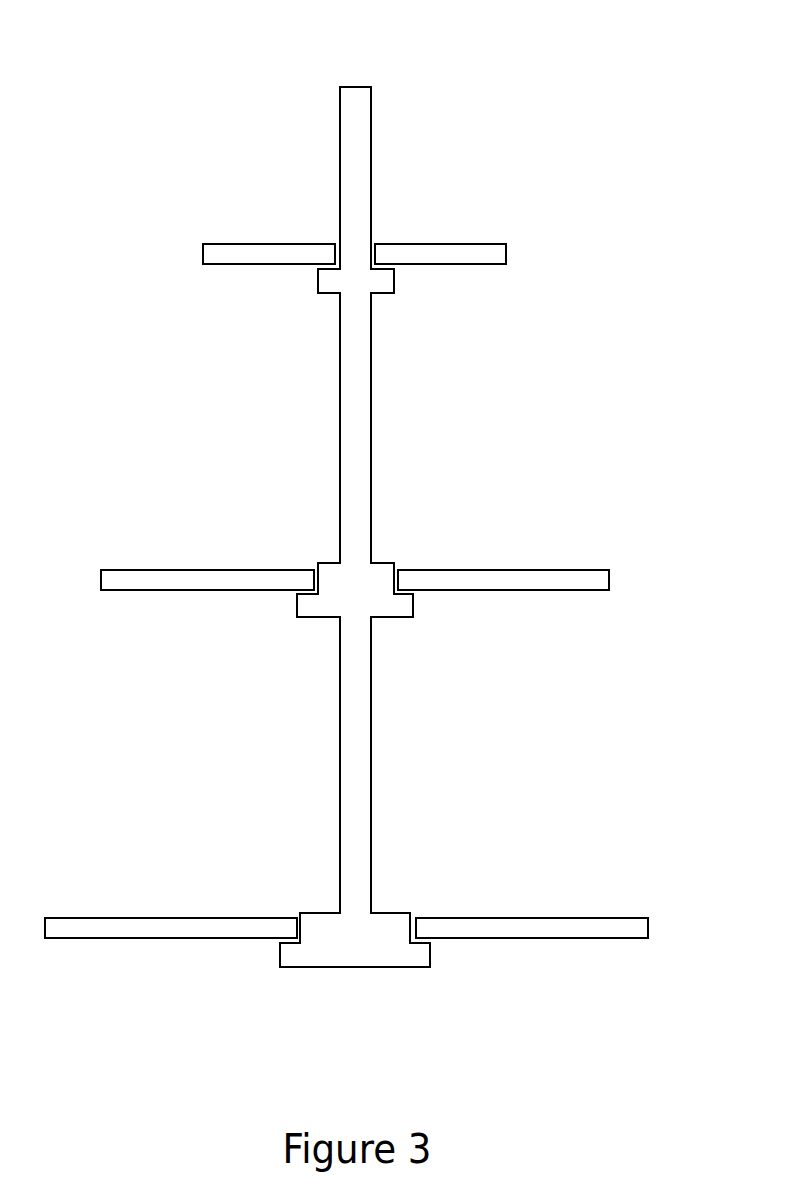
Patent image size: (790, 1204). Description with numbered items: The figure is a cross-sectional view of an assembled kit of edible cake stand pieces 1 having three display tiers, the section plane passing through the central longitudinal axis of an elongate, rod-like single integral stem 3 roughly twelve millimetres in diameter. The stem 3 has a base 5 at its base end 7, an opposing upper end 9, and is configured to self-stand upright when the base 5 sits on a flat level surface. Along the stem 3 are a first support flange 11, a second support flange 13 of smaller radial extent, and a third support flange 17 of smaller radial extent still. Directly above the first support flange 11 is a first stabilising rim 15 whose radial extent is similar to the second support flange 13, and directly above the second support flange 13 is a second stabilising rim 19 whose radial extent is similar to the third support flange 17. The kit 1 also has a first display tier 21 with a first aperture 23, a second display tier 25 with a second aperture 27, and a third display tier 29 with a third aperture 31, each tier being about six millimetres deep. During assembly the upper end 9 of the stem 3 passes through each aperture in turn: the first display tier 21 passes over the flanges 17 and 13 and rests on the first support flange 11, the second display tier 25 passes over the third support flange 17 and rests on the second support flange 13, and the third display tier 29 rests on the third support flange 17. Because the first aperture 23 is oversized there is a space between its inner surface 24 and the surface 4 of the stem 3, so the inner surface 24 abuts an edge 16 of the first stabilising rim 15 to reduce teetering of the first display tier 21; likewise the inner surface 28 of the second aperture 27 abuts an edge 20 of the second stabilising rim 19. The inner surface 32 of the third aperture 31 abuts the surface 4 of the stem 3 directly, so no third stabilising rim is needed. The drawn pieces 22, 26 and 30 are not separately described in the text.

The kit of edible cake stand pieces 1 is at (172, 153).
The stem 3 is at (371, 355).
The surface of the stem 4 is at (358, 413).
The base 5 is at (322, 968).
The base end 7 is at (353, 998).
The upper end 9 is at (362, 76).
The first support flange 11 is at (292, 958).
The second support flange 13 is at (313, 605).
The first stabilising rim 15 is at (390, 927).
The edge of the first stabilising rim 16 is at (300, 913).
The third support flange 17 is at (327, 280).
The second stabilising rim 19 is at (380, 575).
The edge of the second stabilising rim 20 is at (317, 562).
The first display tier 21 is at (643, 927).
The lower right flange 22 is at (612, 918).
The first aperture 23 is at (300, 920).
The inner surface of the first aperture 24 is at (415, 968).
The second display tier 25 is at (603, 577).
The middle right flange 26 is at (572, 568).
The second aperture 27 is at (317, 570).
The inner surface of the second aperture 28 is at (393, 592).
The third display tier 29 is at (507, 249).
The upper right flange 30 is at (470, 243).
The third aperture 31 is at (334, 243).
The inner surface of the third aperture 32 is at (377, 255).